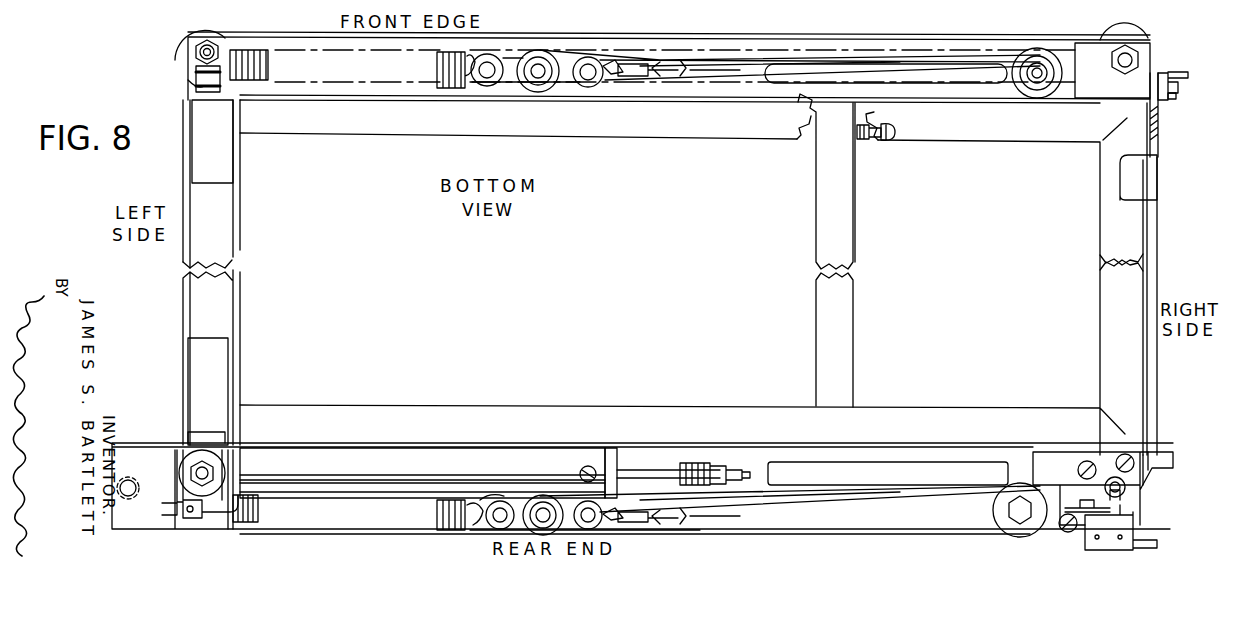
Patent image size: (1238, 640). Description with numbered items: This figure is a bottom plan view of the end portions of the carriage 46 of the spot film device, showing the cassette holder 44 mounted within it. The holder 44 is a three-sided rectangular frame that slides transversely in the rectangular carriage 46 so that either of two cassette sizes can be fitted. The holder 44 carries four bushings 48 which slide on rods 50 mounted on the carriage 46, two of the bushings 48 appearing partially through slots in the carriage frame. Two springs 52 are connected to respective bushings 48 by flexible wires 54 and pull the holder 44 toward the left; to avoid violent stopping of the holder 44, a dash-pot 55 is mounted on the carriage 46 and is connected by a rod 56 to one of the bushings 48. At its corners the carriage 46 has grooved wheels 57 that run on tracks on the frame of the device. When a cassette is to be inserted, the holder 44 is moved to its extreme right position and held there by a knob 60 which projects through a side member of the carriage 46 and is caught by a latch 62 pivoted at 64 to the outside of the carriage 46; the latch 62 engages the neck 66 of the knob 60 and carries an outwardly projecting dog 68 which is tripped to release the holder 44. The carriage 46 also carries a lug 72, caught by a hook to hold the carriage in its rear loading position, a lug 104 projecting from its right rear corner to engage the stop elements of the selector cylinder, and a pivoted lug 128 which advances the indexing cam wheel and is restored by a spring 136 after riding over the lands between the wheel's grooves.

The cassette holder 44 is at (814, 217).
The carriage 46 is at (232, 203).
The bushings 48 is at (723, 60).
The rods 50 is at (976, 76).
The springs 52 is at (250, 48).
The flexible wires 54 is at (906, 56).
The dash-pot 55 is at (358, 468).
The rod 56 is at (652, 476).
The wheels 57 is at (200, 32).
The knob 60 is at (889, 134).
The latch 62 is at (1158, 108).
The pivot 64 is at (1172, 98).
The neck 66 is at (872, 140).
The dog 68 is at (1176, 72).
The lug 72 is at (126, 477).
The lug 104 is at (1158, 458).
The lug 128 is at (1148, 541).
The spring 136 is at (1108, 509).